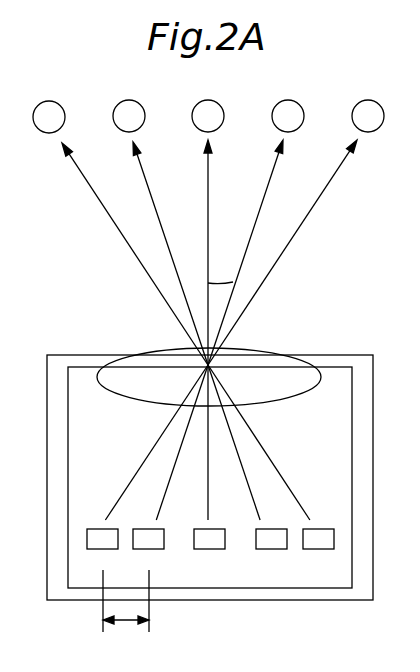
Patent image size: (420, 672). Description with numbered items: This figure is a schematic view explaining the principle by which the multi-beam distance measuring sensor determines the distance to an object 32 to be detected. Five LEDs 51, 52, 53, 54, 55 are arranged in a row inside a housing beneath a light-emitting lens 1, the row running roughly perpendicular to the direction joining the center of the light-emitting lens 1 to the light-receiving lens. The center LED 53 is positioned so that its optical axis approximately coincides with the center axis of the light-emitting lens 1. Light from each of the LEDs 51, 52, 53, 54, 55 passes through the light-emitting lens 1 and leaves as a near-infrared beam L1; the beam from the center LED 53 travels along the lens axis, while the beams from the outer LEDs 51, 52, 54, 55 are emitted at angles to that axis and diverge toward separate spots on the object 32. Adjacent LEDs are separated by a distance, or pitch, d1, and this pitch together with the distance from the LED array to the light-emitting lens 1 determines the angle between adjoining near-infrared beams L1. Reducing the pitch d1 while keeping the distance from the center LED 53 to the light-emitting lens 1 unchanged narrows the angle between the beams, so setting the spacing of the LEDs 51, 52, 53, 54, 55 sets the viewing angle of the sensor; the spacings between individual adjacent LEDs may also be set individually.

The object to be detected 32 is at (50, 110).
The near-infrared beam L1 is at (328, 183).
The light-emitting lens 1 is at (268, 358).
The LED 51 is at (95, 540).
The LED 52 is at (148, 542).
The center LED 53 is at (209, 542).
The LED 54 is at (272, 540).
The LED 55 is at (318, 540).
The distance (pitch) between adjacent LEDs d1 is at (126, 612).